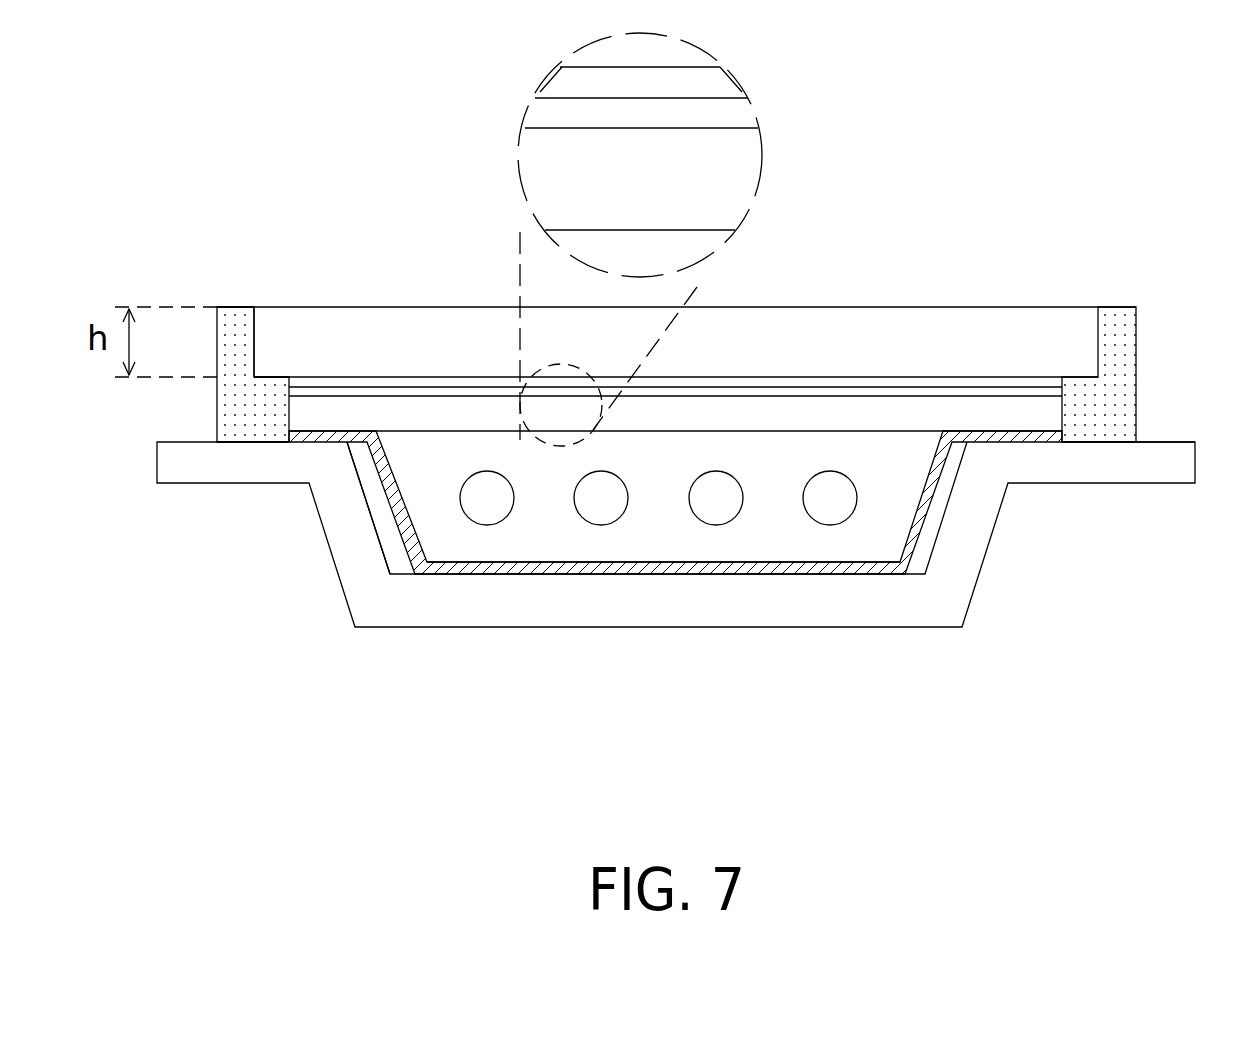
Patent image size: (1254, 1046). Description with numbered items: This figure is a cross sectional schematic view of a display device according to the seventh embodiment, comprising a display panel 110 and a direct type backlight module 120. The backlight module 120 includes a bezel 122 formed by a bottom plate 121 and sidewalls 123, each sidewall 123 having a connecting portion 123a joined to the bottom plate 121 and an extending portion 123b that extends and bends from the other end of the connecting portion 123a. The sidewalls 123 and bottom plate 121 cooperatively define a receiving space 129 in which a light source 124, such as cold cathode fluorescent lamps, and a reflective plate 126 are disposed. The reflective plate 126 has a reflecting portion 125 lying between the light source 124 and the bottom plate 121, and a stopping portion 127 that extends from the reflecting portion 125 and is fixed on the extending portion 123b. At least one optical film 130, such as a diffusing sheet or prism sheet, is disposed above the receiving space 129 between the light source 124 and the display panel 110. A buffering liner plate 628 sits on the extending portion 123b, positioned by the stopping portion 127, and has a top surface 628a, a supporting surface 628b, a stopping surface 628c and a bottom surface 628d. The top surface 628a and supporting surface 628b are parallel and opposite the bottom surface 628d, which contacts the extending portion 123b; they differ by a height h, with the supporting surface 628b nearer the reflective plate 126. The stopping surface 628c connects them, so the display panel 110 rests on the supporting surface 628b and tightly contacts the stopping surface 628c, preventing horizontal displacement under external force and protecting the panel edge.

The display panel 110 is at (1083, 344).
The direct type backlight module 120 is at (1253, 802).
The bottom plate 121 is at (890, 615).
The bezel 122 is at (1095, 738).
The sidewalls 123 is at (1153, 683).
The connecting portion 123a is at (957, 565).
The extending portion 123b is at (1103, 472).
The light source 124 is at (722, 527).
The reflecting portion 125 is at (517, 567).
The reflective plate 126 is at (557, 738).
The stopping portion 127 is at (348, 434).
The receiving space 129 is at (958, 454).
The optical film 130 is at (772, 67).
The buffering liner plate 628 is at (230, 422).
The top surface 628a is at (237, 305).
The supporting surface 628b is at (283, 373).
The stopping surface 628c is at (258, 325).
The bottom surface 628d is at (225, 446).